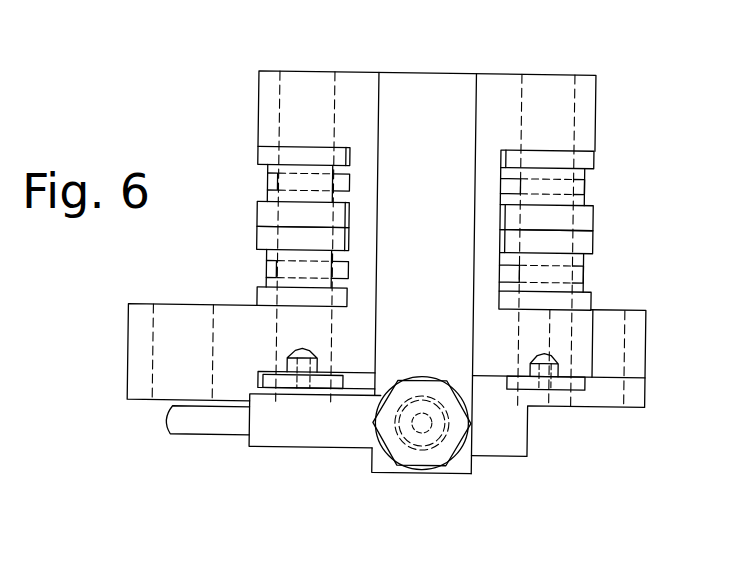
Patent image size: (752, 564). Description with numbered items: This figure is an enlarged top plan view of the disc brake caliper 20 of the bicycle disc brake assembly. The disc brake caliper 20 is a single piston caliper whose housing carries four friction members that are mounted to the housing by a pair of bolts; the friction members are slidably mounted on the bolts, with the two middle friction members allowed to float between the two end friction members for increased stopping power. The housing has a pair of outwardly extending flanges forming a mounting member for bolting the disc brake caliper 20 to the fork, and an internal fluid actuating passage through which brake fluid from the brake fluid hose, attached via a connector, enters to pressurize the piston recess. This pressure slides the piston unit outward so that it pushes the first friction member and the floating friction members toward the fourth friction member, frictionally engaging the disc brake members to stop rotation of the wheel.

The disc brake caliper 20 is at (629, 92).